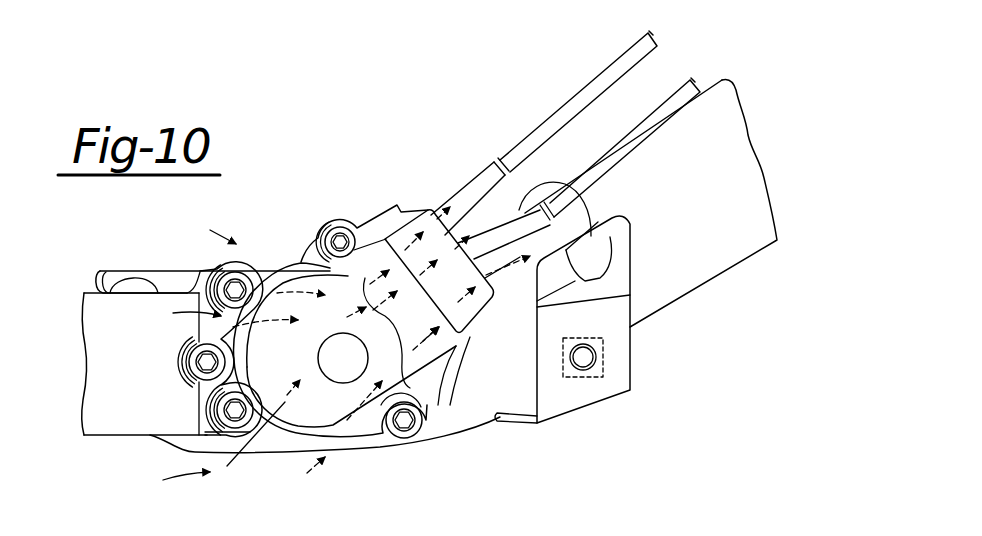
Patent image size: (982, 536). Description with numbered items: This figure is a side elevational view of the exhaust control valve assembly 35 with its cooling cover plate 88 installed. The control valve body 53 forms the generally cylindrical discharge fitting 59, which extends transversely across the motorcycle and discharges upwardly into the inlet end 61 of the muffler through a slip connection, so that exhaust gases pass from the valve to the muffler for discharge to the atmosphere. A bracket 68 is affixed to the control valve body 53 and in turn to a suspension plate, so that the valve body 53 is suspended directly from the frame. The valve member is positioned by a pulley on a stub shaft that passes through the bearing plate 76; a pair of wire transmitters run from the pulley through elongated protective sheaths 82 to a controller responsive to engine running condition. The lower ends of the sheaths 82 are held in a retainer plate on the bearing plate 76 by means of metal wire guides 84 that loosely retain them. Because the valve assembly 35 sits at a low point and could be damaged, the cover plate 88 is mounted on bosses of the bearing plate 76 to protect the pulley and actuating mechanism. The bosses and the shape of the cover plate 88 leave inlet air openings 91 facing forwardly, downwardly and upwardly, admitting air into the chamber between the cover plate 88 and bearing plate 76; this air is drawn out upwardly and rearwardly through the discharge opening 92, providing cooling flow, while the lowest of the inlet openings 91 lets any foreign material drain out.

The control valve assembly 35 is at (365, 208).
The control valve body 53 is at (183, 233).
The discharge fitting 59 is at (476, 428).
The muffler inlet end 61 is at (690, 293).
The bracket 68 is at (632, 378).
The bearing plate 76 is at (276, 445).
The protective sheath 82 is at (585, 90).
The metal wire guide 84 is at (472, 172).
The cover plate 88 is at (427, 436).
The inlet air openings 91 is at (274, 292).
The discharge opening 92 is at (494, 291).